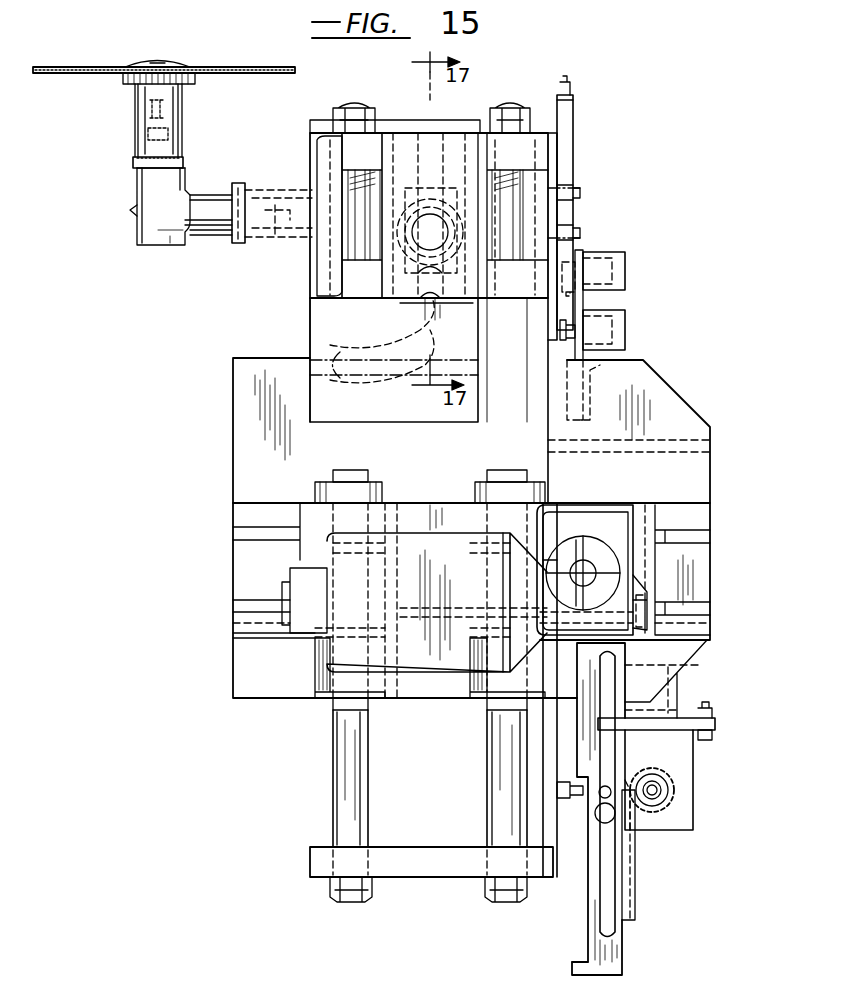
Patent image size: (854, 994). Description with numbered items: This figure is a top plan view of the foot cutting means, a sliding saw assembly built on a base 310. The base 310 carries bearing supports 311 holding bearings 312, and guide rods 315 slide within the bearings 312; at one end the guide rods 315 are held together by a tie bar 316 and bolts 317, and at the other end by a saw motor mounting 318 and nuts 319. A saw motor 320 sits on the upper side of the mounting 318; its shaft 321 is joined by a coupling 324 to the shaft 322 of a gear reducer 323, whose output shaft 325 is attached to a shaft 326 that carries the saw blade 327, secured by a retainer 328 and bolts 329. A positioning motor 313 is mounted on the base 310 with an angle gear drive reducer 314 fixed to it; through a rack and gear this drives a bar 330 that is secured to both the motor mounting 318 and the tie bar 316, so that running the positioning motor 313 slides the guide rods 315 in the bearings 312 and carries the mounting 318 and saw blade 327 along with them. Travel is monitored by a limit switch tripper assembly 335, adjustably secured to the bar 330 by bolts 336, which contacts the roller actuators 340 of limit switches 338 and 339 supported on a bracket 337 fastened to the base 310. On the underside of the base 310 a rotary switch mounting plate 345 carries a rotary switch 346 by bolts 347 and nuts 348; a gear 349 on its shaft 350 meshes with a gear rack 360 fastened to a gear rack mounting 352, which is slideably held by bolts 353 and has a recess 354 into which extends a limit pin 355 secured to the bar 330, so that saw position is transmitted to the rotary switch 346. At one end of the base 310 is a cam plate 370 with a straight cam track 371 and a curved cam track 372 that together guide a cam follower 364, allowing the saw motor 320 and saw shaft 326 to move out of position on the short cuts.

The base 310 is at (250, 672).
The bearing supports 311 is at (322, 489).
The bearings 312 is at (478, 483).
The positioning motor 313 is at (432, 672).
The reducer 314 is at (537, 640).
The guide rods 315 is at (338, 791).
The tie bar 316 is at (443, 860).
The bolts 317 is at (337, 888).
The saw motor mounting 318 is at (541, 133).
The nuts 319 is at (360, 118).
The saw motor 320 is at (325, 140).
The shaft 321 is at (290, 240).
The shaft 322 is at (248, 238).
The gear reducer 323 is at (168, 195).
The coupling 324 is at (267, 192).
The shaft 325 is at (185, 147).
The shaft 326 is at (165, 113).
The saw blade 327 is at (263, 67).
The retainer 328 is at (183, 67).
The bolts 329 is at (160, 61).
The bar 330 is at (551, 860).
The limit switch tripper assembly 335 is at (568, 116).
The bolts 336 is at (582, 232).
The bracket 337 is at (646, 361).
The limit switch 338 is at (615, 329).
The limit switch 339 is at (613, 269).
The roller actuators 340 is at (590, 300).
The rotary switch mounting plate 345 is at (672, 698).
The rotary switch 346 is at (686, 826).
The bolts 347 is at (706, 708).
The nuts 348 is at (702, 732).
The gear 349 is at (672, 811).
The shaft 350 is at (657, 790).
The gear rack mounting 352 is at (598, 962).
The bolts 353 is at (608, 786).
The recess 354 is at (586, 905).
The limit pin 355 is at (566, 800).
The gear rack 360 is at (632, 901).
The cam follower 364 is at (433, 300).
The cam plate 370 is at (318, 297).
The straight cam track 371 is at (433, 165).
The curved cam track 372 is at (330, 338).